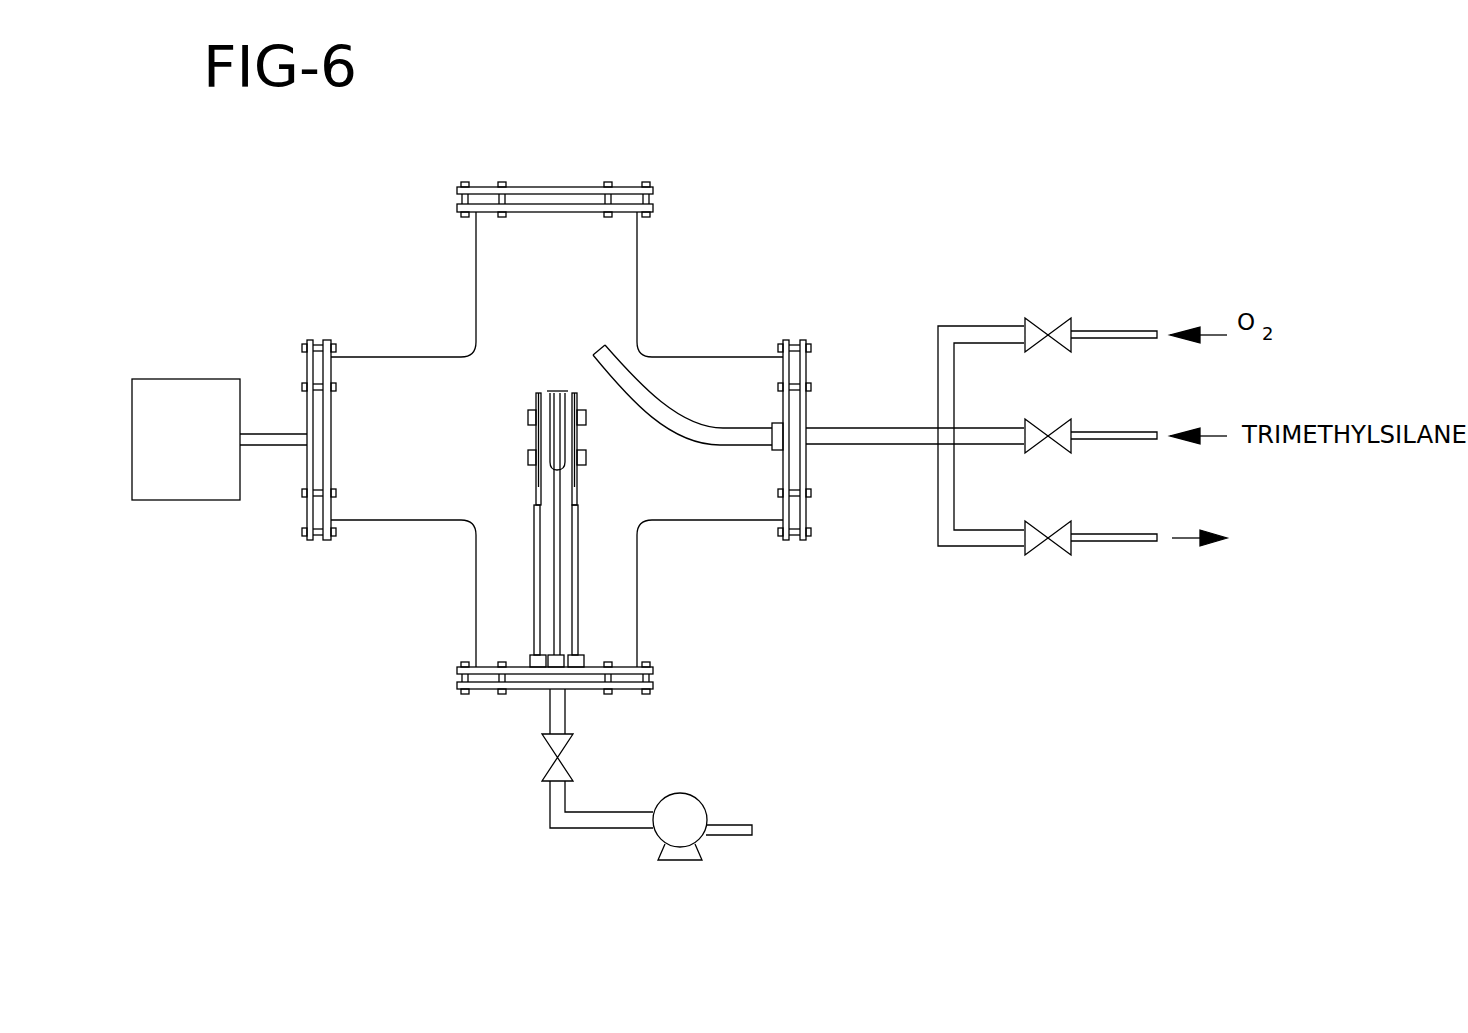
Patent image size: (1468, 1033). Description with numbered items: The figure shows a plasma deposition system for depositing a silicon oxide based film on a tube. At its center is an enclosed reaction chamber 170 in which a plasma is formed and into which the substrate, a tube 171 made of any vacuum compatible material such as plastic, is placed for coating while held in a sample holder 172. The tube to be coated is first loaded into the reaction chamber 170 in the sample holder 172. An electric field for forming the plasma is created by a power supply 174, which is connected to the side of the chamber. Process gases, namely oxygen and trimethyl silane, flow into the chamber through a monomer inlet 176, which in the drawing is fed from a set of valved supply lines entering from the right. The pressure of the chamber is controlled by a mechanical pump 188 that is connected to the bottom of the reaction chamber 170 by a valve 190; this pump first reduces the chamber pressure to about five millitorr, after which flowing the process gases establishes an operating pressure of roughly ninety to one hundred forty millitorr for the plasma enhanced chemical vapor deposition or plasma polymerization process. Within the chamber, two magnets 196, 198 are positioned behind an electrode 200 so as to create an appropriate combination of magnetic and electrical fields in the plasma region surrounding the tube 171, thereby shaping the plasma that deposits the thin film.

The reaction chamber 170 is at (607, 270).
The tube 171 is at (562, 437).
The sample holder 172 is at (557, 562).
The power supply 174 is at (200, 379).
The monomer inlet 176 is at (633, 393).
The mechanical pump 188 is at (673, 812).
The valve 190 is at (557, 757).
The magnet 196 is at (527, 412).
The magnet 198 is at (528, 462).
The electrode 200 is at (533, 408).